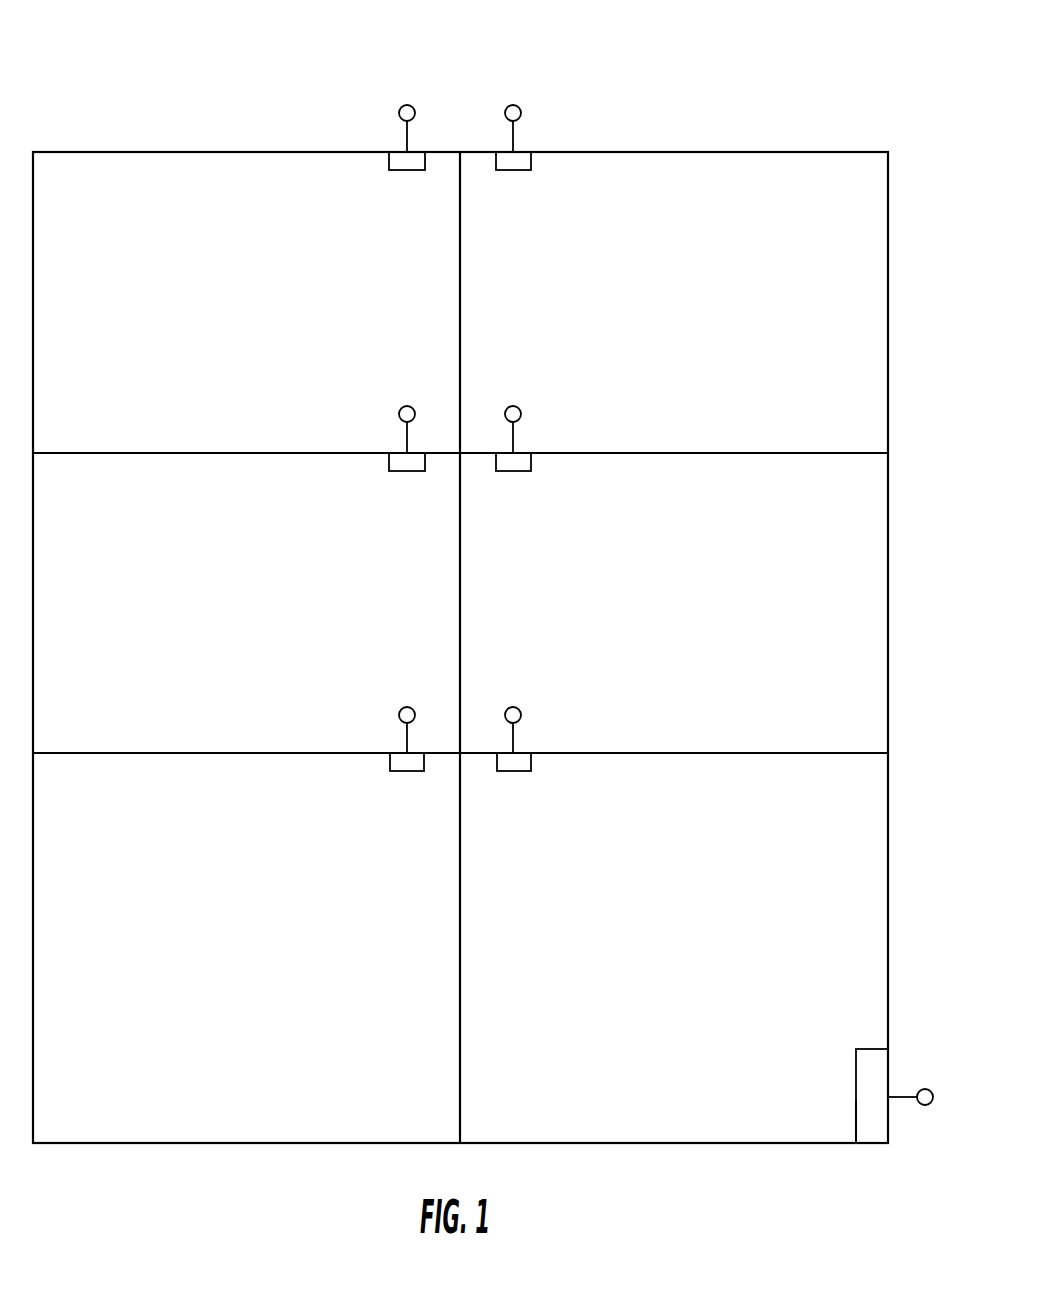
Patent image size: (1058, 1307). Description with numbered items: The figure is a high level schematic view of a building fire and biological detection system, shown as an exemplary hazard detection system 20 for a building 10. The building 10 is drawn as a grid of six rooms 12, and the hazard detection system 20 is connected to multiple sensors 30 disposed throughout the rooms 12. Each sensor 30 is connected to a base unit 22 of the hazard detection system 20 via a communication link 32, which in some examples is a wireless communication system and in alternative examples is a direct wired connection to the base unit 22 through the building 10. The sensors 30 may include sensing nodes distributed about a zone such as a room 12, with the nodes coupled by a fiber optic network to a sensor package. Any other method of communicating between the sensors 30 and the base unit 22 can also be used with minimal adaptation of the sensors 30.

The building 10 is at (98, 65).
The room 12 is at (276, 319).
The hazard detection system 20 is at (873, 1072).
The base unit 22 is at (855, 1120).
The sensor 30 is at (410, 772).
The communication link 32 is at (403, 738).